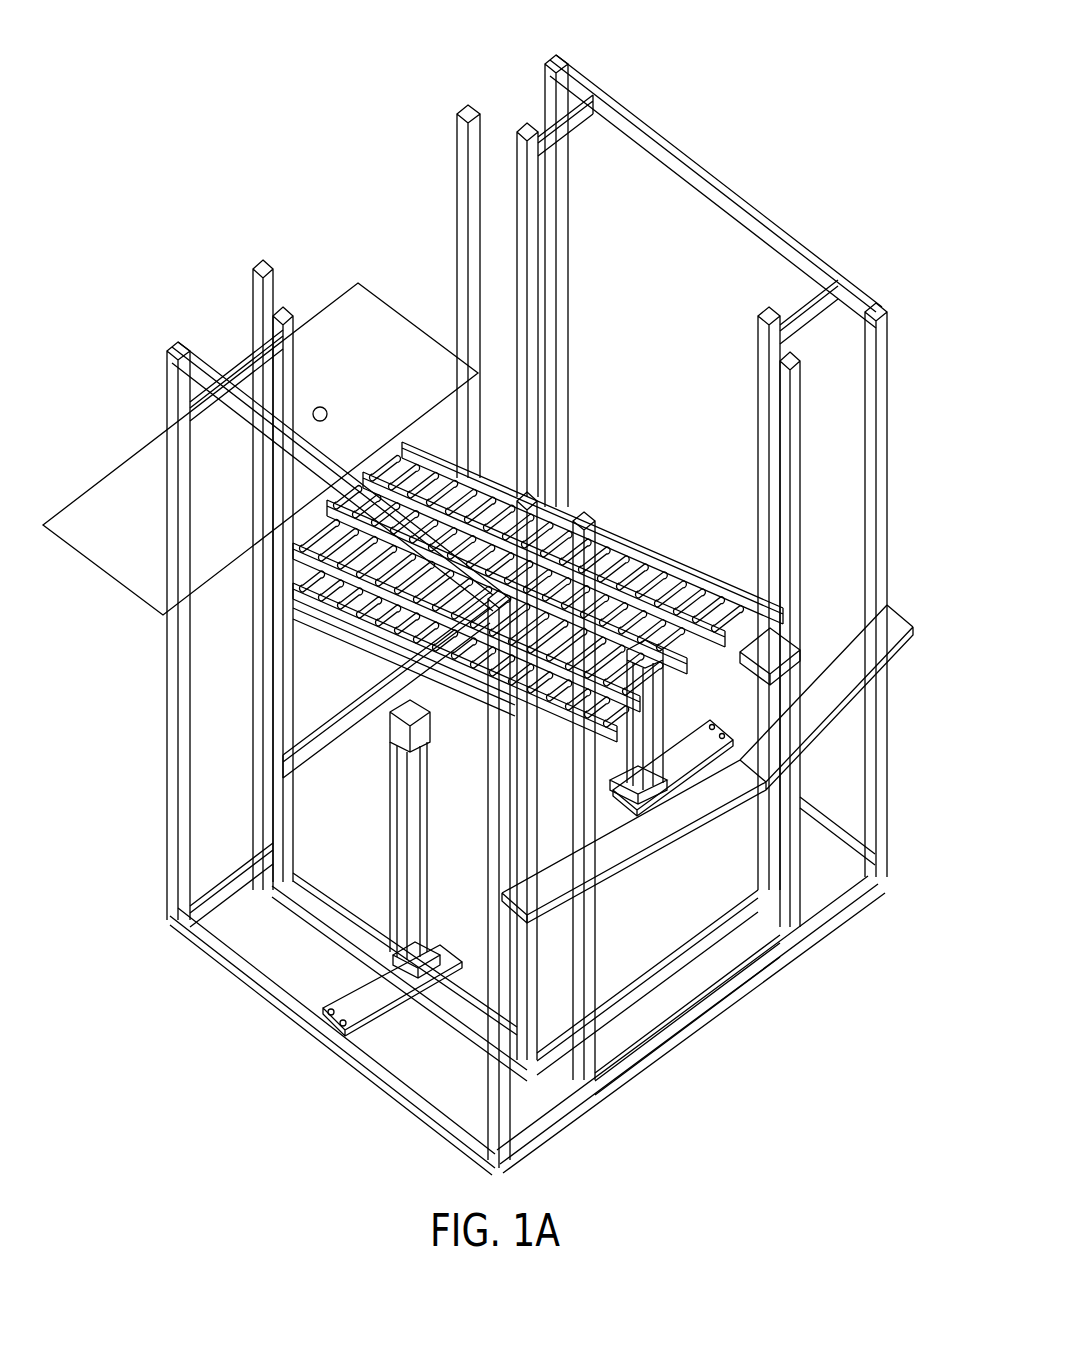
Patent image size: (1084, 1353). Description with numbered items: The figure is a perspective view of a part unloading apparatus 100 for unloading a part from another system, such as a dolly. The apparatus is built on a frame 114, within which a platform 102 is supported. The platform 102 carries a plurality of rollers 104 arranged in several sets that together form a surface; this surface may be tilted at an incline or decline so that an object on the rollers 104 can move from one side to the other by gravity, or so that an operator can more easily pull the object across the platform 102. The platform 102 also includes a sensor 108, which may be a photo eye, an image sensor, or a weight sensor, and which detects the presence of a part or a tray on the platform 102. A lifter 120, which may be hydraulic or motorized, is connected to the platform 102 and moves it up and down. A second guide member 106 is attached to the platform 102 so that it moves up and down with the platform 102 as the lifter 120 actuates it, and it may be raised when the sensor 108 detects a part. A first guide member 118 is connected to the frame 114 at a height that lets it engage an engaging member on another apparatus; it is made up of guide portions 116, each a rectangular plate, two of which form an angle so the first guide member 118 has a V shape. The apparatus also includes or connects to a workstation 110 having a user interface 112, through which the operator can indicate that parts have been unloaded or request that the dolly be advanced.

The part unloading apparatus 100 is at (880, 148).
The platform 102 is at (538, 583).
The rollers 104 is at (667, 557).
The second guide member 106 is at (776, 650).
The sensor 108 is at (456, 540).
The workstation 110 is at (112, 436).
The user interface 112 is at (321, 407).
The frame 114 is at (883, 470).
The guide portion 116 is at (893, 621).
The first guide member 118 is at (724, 848).
The lifter 120 is at (403, 863).